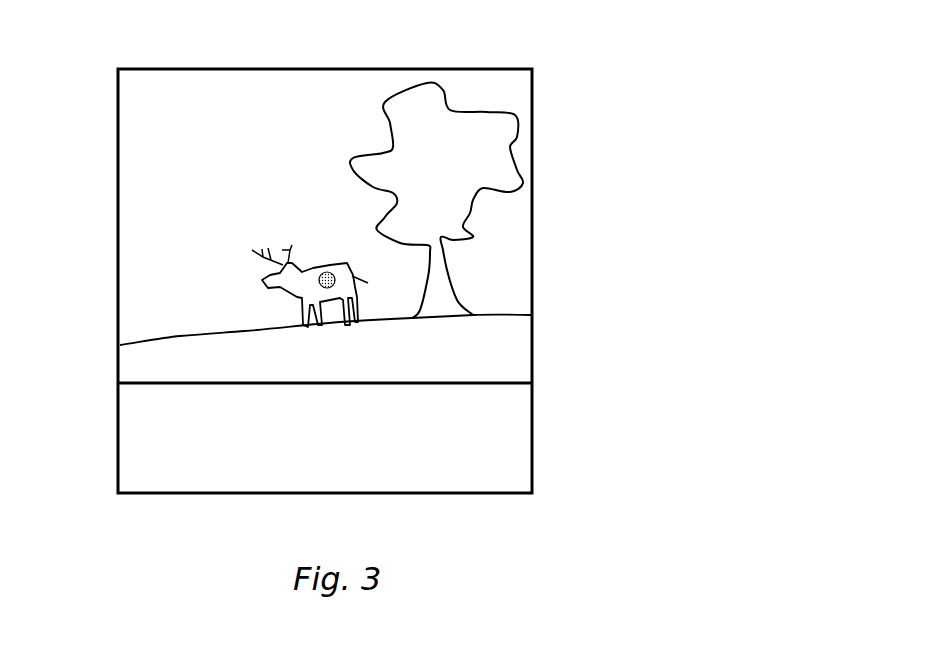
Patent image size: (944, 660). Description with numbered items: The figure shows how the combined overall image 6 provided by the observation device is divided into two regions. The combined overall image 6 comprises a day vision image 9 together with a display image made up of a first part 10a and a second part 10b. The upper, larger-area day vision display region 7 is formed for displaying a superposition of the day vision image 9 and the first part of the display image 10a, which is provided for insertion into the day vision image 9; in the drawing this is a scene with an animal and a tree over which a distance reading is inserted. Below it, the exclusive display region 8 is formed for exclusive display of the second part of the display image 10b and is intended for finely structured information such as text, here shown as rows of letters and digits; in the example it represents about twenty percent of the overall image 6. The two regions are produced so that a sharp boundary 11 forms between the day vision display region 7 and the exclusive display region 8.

The combined overall image 6 is at (530, 25).
The day vision display region 7 is at (594, 211).
The exclusive display region 8 is at (595, 461).
The day vision image 9 is at (172, 240).
The first part of the display image 10a is at (143, 105).
The second part of the display image 10b is at (143, 412).
The sharp boundary 11 is at (457, 383).